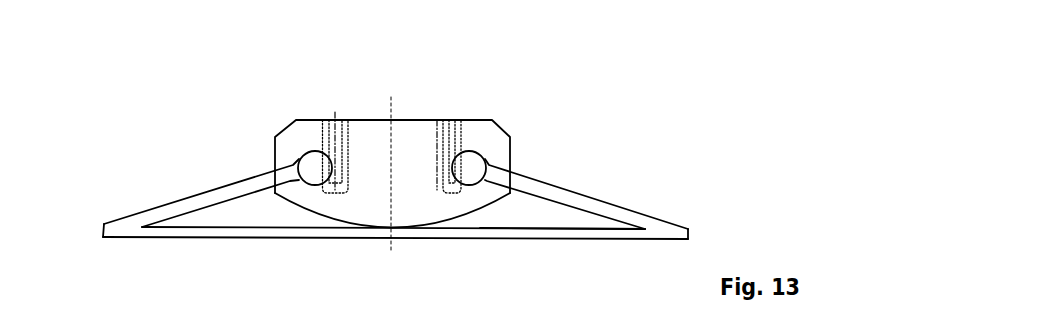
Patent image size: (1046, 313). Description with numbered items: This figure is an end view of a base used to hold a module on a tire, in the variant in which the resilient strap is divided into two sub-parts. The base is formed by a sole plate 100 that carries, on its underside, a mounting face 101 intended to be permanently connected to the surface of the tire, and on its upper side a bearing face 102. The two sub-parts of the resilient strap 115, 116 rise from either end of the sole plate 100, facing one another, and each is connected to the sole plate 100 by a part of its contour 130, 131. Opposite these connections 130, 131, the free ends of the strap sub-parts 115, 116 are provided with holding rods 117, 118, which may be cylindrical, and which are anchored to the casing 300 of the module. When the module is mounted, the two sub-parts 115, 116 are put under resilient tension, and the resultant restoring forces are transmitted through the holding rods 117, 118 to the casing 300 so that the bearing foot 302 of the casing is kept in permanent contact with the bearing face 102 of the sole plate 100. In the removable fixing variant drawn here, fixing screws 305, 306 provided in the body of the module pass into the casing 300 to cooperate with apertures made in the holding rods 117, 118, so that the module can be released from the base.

The sole plate 100 is at (285, 230).
The mounting face 101 is at (500, 238).
The bearing face 102 is at (552, 217).
The sub-part of the resilient strap 115 is at (233, 188).
The sub-part of the resilient strap 116 is at (543, 188).
The holding rod 117 is at (320, 170).
The holding rod 118 is at (466, 160).
The connection contour 130 is at (118, 226).
The connection contour 131 is at (690, 230).
The casing 300 is at (408, 120).
The bearing foot 302 is at (382, 215).
The fixing screw 305 is at (330, 122).
The fixing screw 306 is at (454, 120).